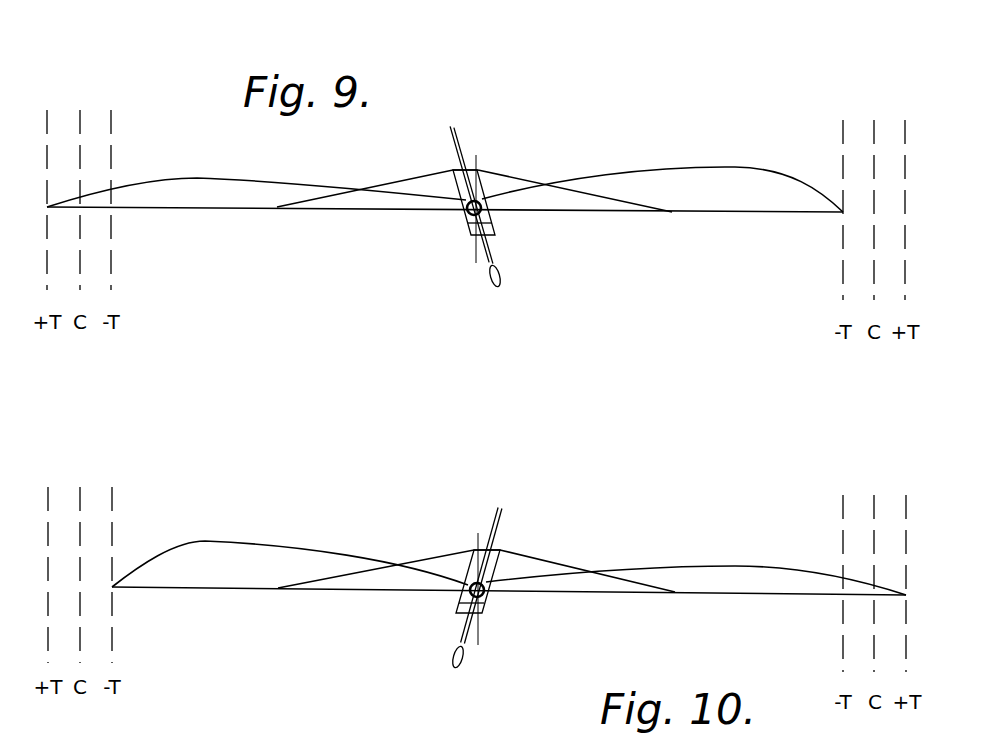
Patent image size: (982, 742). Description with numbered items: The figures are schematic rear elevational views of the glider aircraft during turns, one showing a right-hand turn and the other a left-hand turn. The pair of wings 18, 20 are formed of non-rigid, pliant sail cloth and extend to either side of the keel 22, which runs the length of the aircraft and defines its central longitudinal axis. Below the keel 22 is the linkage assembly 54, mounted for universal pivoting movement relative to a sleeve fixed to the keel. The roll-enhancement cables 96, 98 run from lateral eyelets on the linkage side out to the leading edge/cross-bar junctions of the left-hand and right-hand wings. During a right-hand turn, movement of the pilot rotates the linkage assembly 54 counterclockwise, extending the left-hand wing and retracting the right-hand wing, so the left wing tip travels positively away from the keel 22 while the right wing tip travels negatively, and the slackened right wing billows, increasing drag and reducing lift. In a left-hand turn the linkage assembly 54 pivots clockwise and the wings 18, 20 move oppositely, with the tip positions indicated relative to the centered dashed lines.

In FIG. 9, the wing 18 is at (172, 195).
In FIG. 10, the wing 18 is at (173, 577).
In FIG. 9, the wing 20 is at (767, 207).
In FIG. 10, the wing 20 is at (765, 587).
In FIG. 9, the keel 22 is at (465, 217).
In FIG. 10, the keel 22 is at (462, 603).
In FIG. 9, the linkage assembly 54 is at (498, 238).
In FIG. 10, the linkage assembly 54 is at (485, 617).
In FIG. 9, the roll-enhancement cable 96 is at (413, 172).
In FIG. 10, the roll-enhancement cable 96 is at (415, 560).
In FIG. 9, the roll-enhancement cable 98 is at (523, 175).
In FIG. 10, the roll-enhancement cable 98 is at (555, 560).